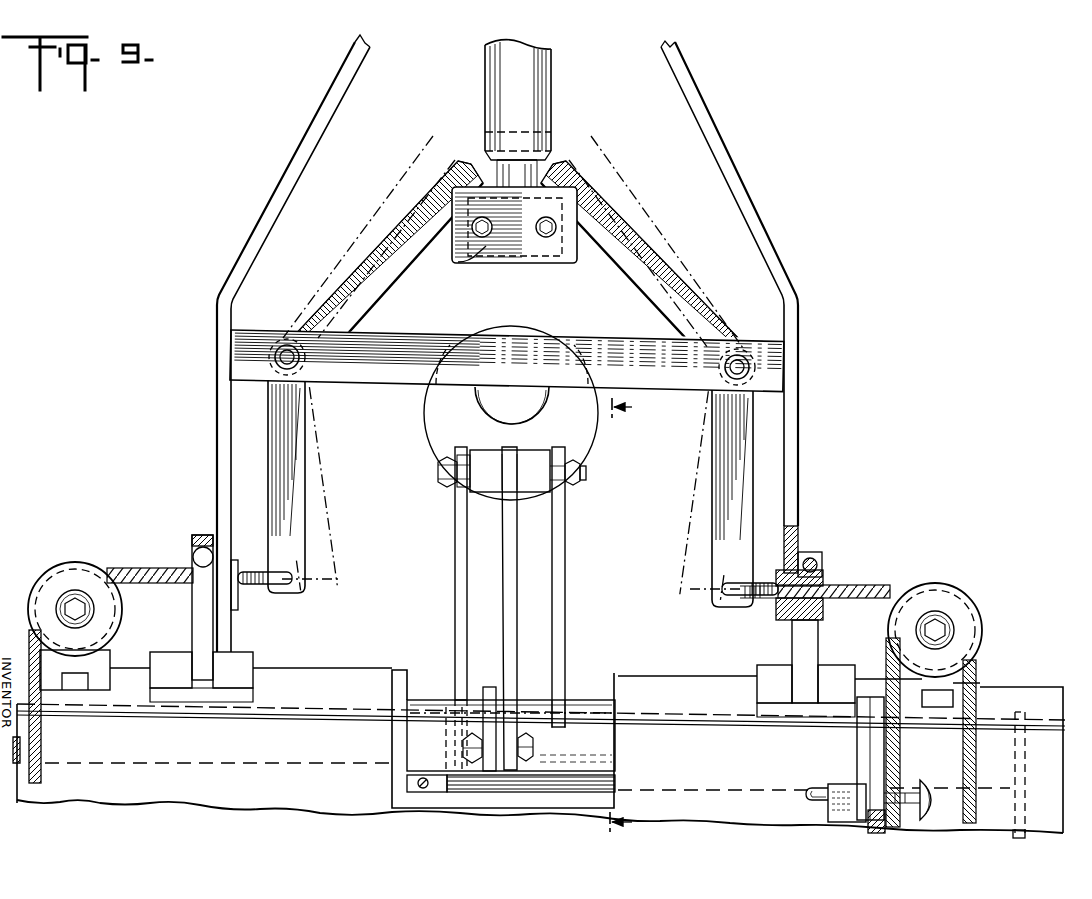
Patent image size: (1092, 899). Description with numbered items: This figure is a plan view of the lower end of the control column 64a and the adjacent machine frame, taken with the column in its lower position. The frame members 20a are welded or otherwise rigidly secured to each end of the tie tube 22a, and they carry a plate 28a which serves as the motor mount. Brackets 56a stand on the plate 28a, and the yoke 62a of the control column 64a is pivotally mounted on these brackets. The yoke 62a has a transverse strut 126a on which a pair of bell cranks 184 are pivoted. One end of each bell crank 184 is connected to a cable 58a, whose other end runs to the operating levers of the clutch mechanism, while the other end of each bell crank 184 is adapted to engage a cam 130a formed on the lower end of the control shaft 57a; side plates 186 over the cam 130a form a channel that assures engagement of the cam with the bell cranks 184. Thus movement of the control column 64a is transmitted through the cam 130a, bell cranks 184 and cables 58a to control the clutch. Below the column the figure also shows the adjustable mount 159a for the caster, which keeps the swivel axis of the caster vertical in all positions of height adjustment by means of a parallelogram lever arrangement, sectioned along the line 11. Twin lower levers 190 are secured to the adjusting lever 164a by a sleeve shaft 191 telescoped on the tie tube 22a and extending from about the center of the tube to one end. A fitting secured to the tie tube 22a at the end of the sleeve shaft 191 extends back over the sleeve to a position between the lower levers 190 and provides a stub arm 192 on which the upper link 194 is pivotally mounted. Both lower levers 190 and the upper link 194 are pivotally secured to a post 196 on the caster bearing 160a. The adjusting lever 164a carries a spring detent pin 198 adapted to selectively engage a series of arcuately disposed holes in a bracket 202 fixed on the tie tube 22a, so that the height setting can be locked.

The section line 11- 11 is at (637, 616).
The frame member 20a is at (1022, 773).
The tie tube 22a is at (396, 737).
The plate 28a is at (300, 684).
The bracket 56a is at (200, 606).
The control shaft 57a is at (492, 58).
The cable 58a is at (135, 574).
The yoke 62a is at (291, 167).
The control column 64a is at (523, 343).
The transverse strut 126a is at (404, 348).
The cam 130a is at (514, 225).
The adjustable mount 159a is at (470, 430).
The caster bearing 160a is at (540, 395).
The adjusting lever 164a is at (870, 757).
The bell crank 184 is at (350, 290).
The side plate 186 is at (484, 250).
The lower lever 190 is at (462, 539).
The sleeve shaft 191 is at (582, 720).
The stub arm 192 is at (432, 720).
The upper link 194 is at (508, 573).
The post 196 is at (538, 478).
The spring detent pin 198 is at (808, 790).
The bracket 202 is at (892, 735).